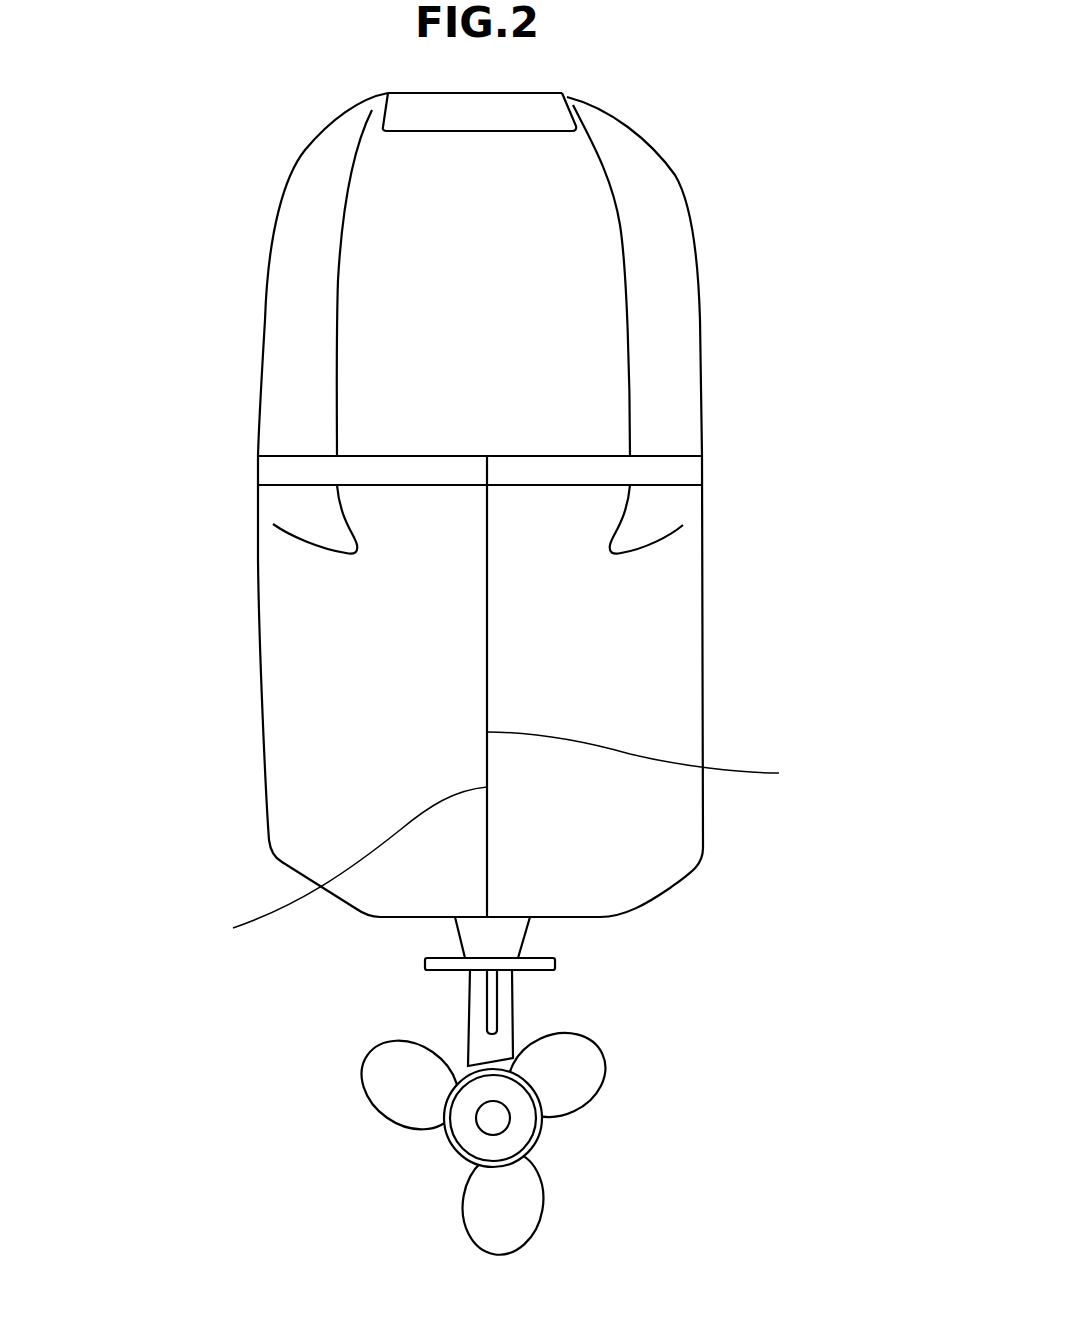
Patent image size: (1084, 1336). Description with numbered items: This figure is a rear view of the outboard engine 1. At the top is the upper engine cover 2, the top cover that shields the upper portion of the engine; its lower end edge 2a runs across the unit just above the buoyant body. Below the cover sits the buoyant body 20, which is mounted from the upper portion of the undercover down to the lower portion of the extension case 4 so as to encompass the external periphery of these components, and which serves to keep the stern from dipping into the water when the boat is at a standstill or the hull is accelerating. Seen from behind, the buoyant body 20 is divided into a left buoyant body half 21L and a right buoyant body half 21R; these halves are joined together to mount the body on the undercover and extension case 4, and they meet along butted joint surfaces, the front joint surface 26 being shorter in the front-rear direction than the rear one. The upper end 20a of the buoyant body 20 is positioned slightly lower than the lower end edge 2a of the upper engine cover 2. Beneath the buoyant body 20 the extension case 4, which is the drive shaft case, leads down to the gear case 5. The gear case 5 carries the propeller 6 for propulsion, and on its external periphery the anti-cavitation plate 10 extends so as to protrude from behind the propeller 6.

The outboard engine 1 is at (772, 193).
The upper engine cover 2 is at (640, 150).
The lower end edge of the upper engine cover 2a is at (423, 457).
The buoyant body 20 is at (479, 686).
The upper end of the buoyant body 20a is at (650, 485).
The left buoyant body half 21L is at (300, 722).
The right buoyant body half 21R is at (670, 708).
The front butted joint surface 26 is at (502, 841).
The extension case 4 is at (493, 937).
The anti-cavitation plate 10 is at (425, 960).
The gear case 5 is at (512, 1007).
The propeller 6 is at (582, 1075).